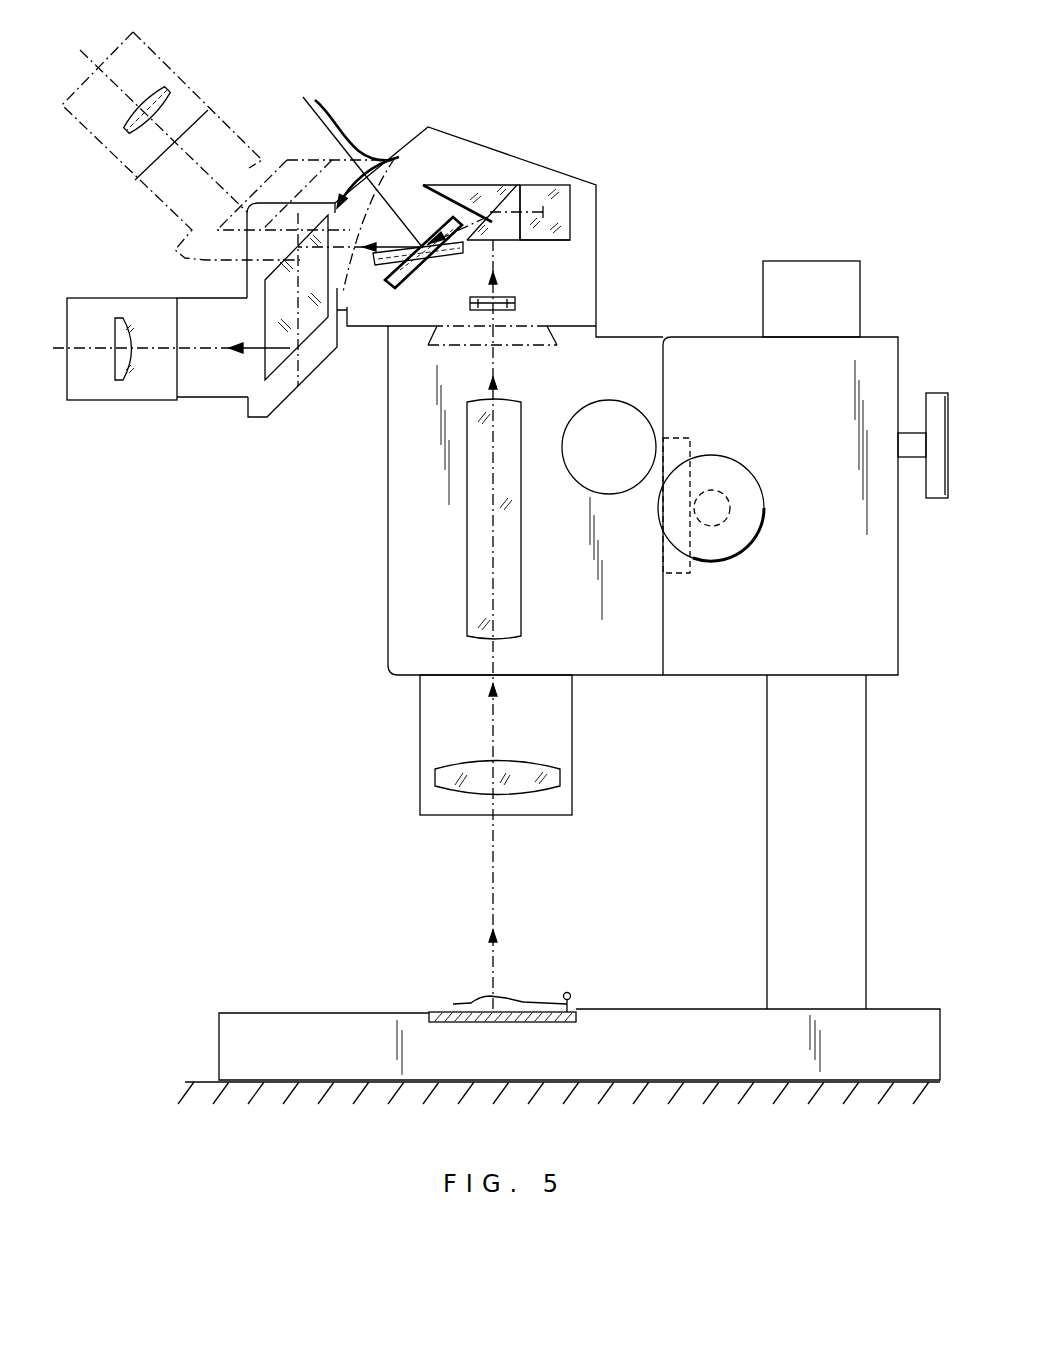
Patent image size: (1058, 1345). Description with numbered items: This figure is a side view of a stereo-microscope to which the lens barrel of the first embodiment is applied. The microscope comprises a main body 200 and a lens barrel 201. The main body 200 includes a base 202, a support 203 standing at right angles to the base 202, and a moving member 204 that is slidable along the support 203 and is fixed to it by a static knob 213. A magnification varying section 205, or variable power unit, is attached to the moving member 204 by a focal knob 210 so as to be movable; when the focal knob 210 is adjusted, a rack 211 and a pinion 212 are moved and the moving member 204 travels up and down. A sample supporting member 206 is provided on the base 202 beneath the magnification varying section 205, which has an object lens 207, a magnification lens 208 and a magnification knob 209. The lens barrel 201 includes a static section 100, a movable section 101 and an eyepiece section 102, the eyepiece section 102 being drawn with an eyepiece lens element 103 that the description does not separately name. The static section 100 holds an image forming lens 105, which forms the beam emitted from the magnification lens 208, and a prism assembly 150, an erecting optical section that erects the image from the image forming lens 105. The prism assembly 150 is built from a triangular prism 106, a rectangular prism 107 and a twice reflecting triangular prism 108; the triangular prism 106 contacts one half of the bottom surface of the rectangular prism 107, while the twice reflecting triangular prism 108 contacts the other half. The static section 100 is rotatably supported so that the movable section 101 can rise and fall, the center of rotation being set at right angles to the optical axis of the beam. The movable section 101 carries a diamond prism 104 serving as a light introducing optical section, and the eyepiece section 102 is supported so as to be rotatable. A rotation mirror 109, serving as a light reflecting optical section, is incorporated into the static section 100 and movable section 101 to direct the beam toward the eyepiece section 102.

The static section 100 is at (522, 156).
The movable section 101 is at (220, 146).
The eyepiece section 102 is at (200, 400).
The imaging lens 103 is at (112, 368).
The diamond prism 104 is at (293, 357).
The image forming lens 105 is at (470, 303).
The triangular prism 106 is at (512, 241).
The rectangular prism 107 is at (557, 184).
The twice reflecting triangular prism 108 is at (473, 184).
The rotation mirror 109 is at (421, 240).
The prism assembly 150 is at (491, 182).
The main body 200 is at (672, 338).
The lens barrel 201 is at (597, 197).
The base 202 is at (701, 1009).
The support 203 is at (767, 823).
The moving member 204 is at (723, 655).
The magnification varying section 205 is at (628, 653).
The sample supporting member 206 is at (436, 1005).
The object lens 207 is at (473, 797).
The magnification lens 208 is at (467, 552).
The magnification knob 209 is at (645, 415).
The focal knob 210 is at (720, 463).
The rack 211 is at (683, 575).
The pinion 212 is at (730, 509).
The static knob 213 is at (935, 392).